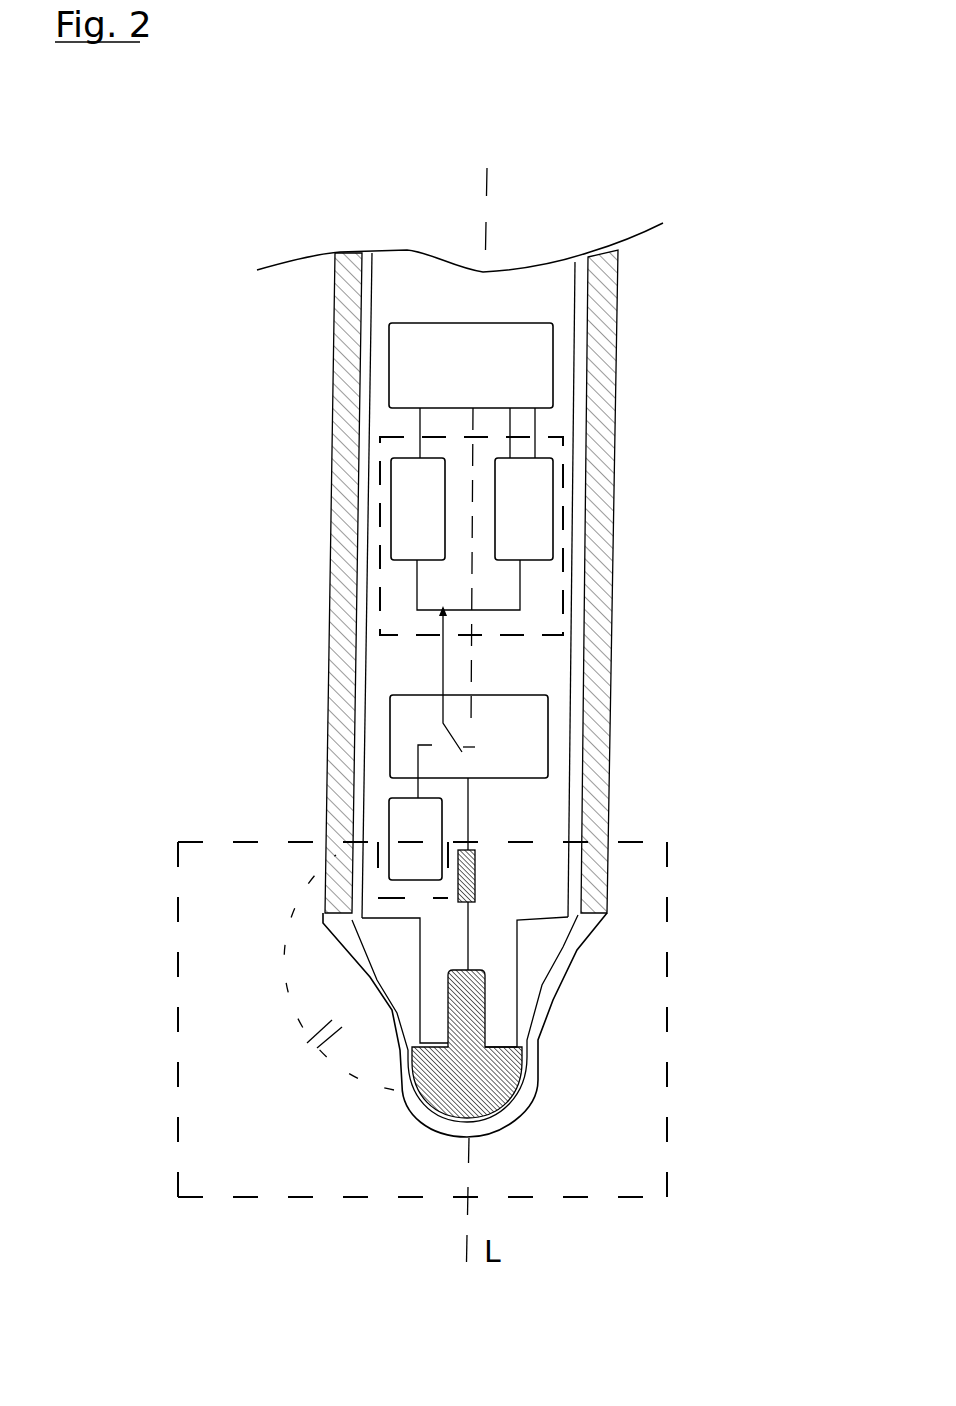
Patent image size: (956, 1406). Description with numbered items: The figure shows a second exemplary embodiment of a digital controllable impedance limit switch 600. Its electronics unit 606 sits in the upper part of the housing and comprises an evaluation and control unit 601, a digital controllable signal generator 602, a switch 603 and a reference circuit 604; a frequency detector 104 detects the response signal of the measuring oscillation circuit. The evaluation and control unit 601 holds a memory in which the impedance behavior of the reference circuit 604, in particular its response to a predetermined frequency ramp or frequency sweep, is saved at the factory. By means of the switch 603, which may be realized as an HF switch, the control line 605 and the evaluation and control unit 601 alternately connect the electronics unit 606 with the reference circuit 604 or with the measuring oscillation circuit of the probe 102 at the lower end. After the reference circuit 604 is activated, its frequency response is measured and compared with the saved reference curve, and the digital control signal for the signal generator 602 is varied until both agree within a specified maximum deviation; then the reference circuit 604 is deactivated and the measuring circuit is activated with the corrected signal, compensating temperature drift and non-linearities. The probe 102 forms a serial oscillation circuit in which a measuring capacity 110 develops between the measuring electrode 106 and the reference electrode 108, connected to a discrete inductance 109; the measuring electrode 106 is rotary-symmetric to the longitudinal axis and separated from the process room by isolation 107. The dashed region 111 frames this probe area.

The impedance limit switch 600 is at (236, 201).
The probe 102 is at (405, 1122).
The frequency detector 104 is at (417, 509).
The measuring electrode 106 is at (487, 1080).
The isolation 107 is at (560, 963).
The reference electrode 108 is at (593, 870).
The discrete inductance 109 is at (477, 883).
The measuring capacity 110 is at (321, 972).
The detail region 111 is at (403, 1205).
The evaluation and control unit 601 is at (471, 365).
The digital controllable signal generator 602 is at (524, 509).
The switch 603 is at (469, 746).
The reference circuit 604 is at (413, 848).
The control line 605 is at (472, 672).
The electronics unit 606 is at (548, 608).